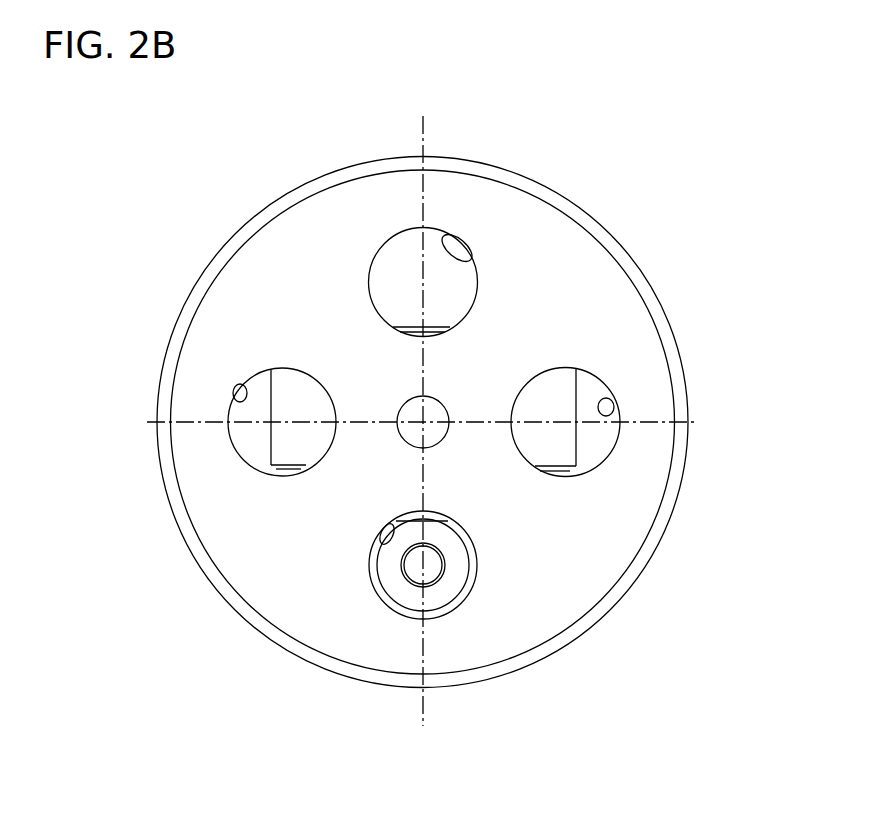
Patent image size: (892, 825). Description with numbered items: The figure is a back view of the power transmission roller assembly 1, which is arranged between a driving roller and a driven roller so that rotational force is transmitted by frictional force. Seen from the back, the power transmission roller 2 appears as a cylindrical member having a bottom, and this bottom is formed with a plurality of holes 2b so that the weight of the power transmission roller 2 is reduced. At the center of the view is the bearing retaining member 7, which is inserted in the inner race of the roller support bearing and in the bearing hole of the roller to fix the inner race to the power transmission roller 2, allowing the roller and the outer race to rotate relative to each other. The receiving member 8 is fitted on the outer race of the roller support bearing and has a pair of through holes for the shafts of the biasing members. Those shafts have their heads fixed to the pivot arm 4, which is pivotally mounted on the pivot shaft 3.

The power transmission roller assembly 1 is at (603, 219).
The power transmission roller 2 is at (661, 318).
The holes 2b is at (473, 260).
The pivot shaft 3 is at (432, 568).
The pivot arm 4 is at (475, 553).
The bearing retaining member 7 is at (440, 402).
The receiving member 8 is at (545, 395).